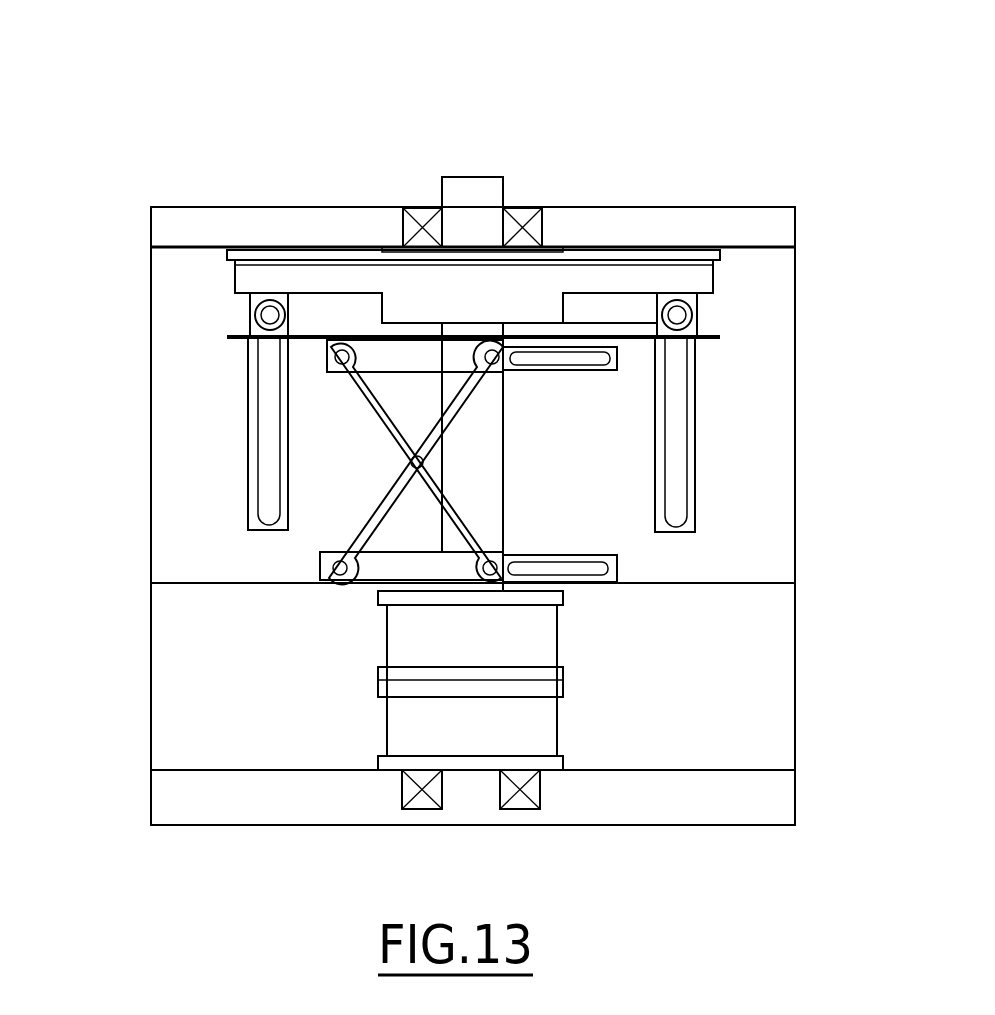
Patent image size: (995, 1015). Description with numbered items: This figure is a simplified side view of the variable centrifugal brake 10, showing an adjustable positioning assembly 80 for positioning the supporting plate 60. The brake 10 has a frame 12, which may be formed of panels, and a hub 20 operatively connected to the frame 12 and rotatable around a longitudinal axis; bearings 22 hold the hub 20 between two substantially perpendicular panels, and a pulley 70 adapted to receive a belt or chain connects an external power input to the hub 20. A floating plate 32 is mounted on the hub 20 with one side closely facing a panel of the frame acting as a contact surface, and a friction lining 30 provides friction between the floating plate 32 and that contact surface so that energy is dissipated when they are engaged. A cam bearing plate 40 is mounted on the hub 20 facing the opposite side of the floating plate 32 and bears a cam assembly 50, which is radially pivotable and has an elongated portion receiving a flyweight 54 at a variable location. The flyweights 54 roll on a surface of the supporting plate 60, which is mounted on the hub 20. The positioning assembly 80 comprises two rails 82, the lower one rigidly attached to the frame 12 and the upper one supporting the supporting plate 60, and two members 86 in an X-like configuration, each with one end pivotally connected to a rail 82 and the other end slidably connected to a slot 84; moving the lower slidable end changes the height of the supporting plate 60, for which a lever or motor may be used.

The variable centrifugal brake 10 is at (163, 120).
The frame 12 is at (750, 215).
The hub 20 is at (448, 197).
The bearings 22 is at (524, 200).
The friction lining 30 is at (720, 252).
The floating plate 32 is at (720, 258).
The cam bearing plate 40 is at (243, 272).
The cam assembly 50 is at (695, 449).
The flyweight 54 is at (700, 310).
The supporting plate 60 is at (228, 340).
The pulley 70 is at (390, 628).
The adjustable positioning assembly 80 is at (503, 510).
The rails 82 is at (577, 555).
The slot 84 is at (590, 585).
The members 86 is at (360, 393).